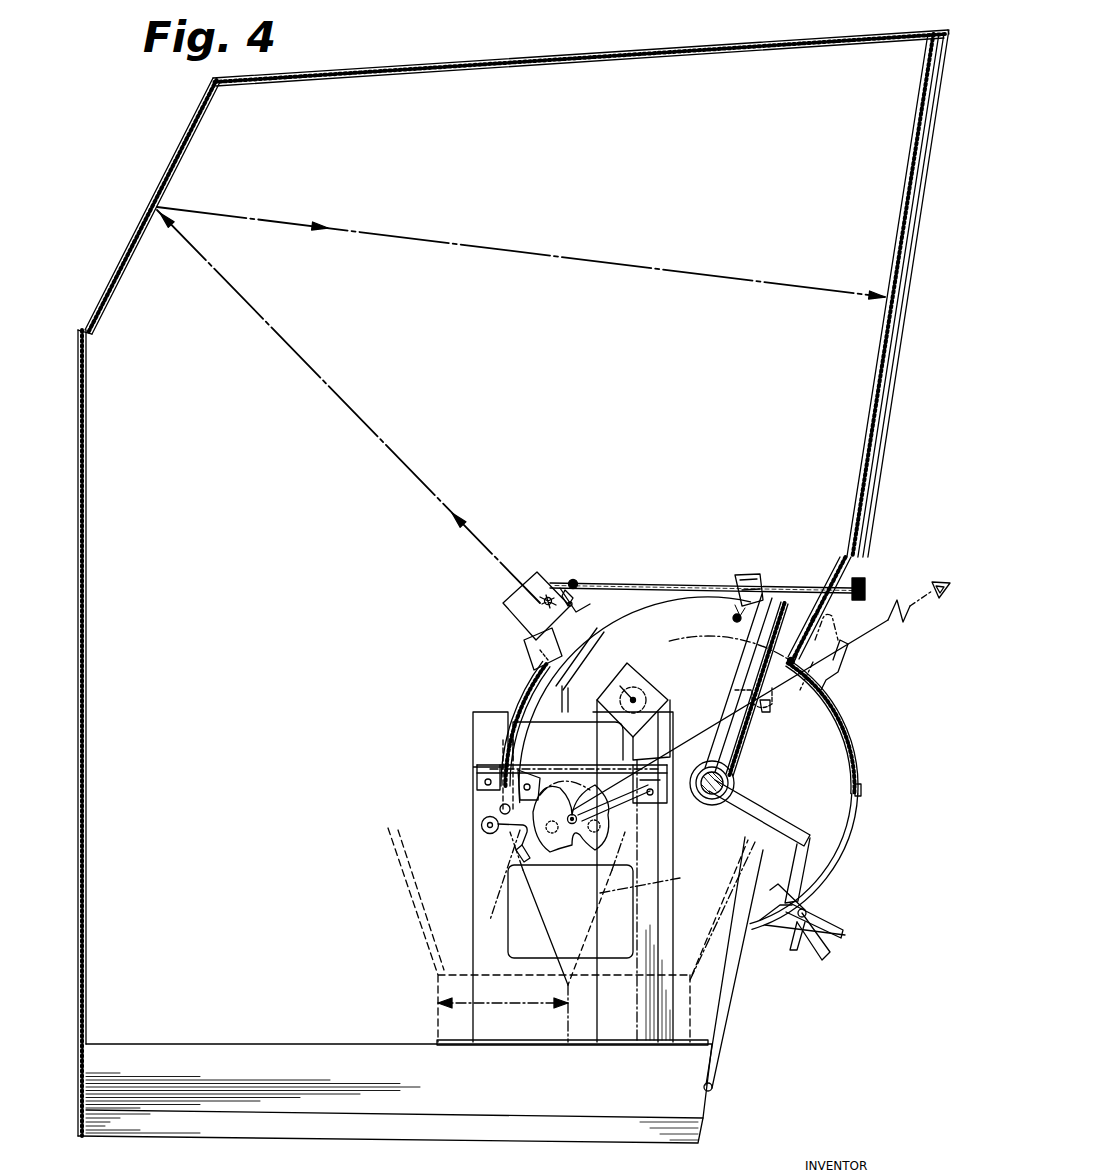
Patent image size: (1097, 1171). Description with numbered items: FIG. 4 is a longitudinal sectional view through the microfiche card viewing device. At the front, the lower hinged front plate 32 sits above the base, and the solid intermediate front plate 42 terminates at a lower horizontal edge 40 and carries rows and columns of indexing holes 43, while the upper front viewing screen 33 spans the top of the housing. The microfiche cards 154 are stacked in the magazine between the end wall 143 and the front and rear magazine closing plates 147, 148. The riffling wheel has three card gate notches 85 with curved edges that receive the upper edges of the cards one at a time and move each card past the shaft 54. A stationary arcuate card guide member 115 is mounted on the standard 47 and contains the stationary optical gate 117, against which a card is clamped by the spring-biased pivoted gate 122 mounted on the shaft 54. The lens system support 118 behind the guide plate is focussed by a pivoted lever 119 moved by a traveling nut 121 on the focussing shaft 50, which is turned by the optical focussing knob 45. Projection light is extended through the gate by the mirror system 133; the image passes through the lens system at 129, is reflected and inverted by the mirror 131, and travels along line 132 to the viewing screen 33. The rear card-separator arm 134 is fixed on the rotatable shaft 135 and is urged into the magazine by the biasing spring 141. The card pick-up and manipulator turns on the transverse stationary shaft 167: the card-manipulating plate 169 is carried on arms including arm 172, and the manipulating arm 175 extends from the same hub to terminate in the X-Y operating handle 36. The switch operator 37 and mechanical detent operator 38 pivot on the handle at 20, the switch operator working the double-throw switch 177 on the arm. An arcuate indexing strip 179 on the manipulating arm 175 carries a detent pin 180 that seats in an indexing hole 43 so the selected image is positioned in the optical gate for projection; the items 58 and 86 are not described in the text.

The pivot 20 is at (818, 905).
The lower hinged front plate 32 is at (735, 995).
The upper front viewing screen 33 is at (905, 180).
The X-Y operating handle 36 is at (830, 955).
The switch operator 37 is at (850, 930).
The mechanical detent operator 38 is at (800, 945).
The lower horizontal edge 40 is at (855, 810).
The intermediate front plate 42 is at (862, 770).
The indexing holes 43 is at (848, 735).
The optical focussing knob 45 is at (866, 585).
The standard 47 is at (524, 648).
The focussing shaft 50 is at (660, 583).
The shaft 54 is at (590, 790).
The bracket 58 is at (530, 775).
The card gate notches 85 is at (566, 848).
The link 86 is at (625, 820).
The arcuate card guide member 115 is at (520, 688).
The stationary optical gate 117 is at (590, 625).
The lens system support 118 is at (510, 605).
The pivoted lever 119 is at (574, 580).
The traveling nut 121 is at (586, 584).
The pivoted gate 122 is at (568, 682).
The lens system optical path 129 is at (412, 440).
The mirror 131 is at (187, 152).
The line 132 is at (408, 236).
The mirror system 133 is at (640, 680).
The rear card-separator arm 134 is at (520, 851).
The rotatable shaft 135 is at (482, 822).
The biasing spring 141 is at (490, 835).
The end wall 143 is at (437, 1022).
The front magazine closing plate 147 is at (745, 905).
The rear magazine closing plate 148 is at (540, 905).
The microfiche cards 154 is at (627, 617).
The transverse stationary shaft 167 is at (710, 795).
The card-manipulating plate 169 is at (752, 700).
The arm 172 is at (737, 745).
The manipulating arm 175 is at (748, 797).
The double-throw switch 177 is at (800, 855).
The arcuate indexing strip 179 is at (858, 830).
The detent pin 180 is at (862, 800).